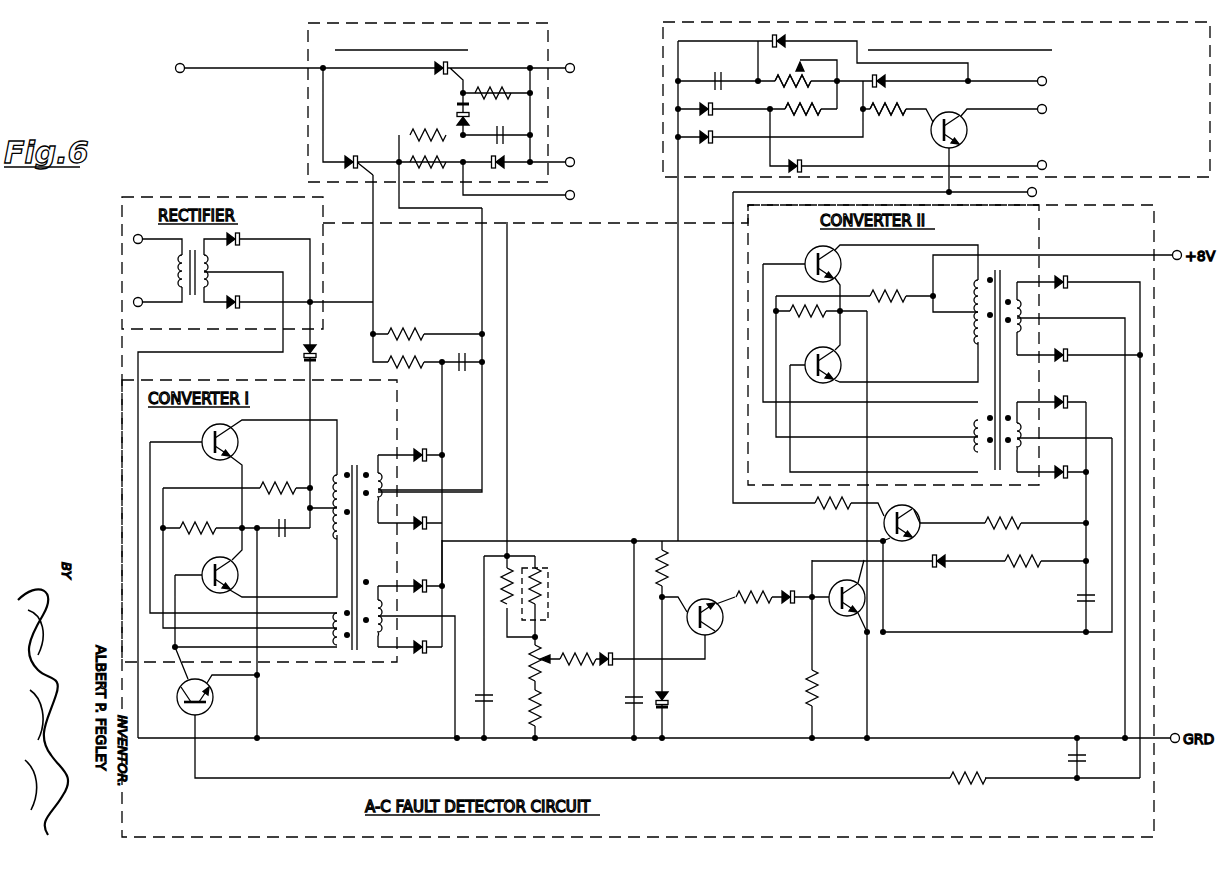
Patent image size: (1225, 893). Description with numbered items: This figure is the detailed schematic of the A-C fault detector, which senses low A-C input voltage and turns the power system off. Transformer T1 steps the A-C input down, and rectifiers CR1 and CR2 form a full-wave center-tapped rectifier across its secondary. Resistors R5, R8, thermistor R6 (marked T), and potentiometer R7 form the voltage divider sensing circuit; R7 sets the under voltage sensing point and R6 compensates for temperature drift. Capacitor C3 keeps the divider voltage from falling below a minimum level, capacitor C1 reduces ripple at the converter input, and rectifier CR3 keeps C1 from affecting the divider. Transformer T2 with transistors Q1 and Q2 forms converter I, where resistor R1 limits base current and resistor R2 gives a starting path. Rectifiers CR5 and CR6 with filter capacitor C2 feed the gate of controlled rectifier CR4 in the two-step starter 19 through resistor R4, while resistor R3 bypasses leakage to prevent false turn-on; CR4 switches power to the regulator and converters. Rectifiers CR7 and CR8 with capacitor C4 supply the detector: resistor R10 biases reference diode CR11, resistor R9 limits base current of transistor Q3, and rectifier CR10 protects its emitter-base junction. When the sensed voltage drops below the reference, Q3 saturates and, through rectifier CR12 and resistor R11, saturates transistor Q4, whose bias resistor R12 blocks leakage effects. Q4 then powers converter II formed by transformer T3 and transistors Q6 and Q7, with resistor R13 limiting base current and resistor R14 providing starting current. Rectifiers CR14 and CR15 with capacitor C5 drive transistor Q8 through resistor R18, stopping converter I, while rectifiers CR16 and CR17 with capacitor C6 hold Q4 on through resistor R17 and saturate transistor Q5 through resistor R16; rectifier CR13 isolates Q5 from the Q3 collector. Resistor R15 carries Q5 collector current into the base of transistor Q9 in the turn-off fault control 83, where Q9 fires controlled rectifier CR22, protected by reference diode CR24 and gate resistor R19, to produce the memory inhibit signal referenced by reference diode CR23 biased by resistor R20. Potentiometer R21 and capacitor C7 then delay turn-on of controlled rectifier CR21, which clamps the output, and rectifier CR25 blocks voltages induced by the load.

The 2-step starter 19 is at (308, 126).
The turn-off fault control 83 is at (663, 88).
The transistor Q1 is at (205, 455).
The transistor Q2 is at (205, 565).
The detector transistor Q3 is at (712, 632).
The transistor Q4 is at (840, 616).
The transistor Q5 is at (916, 518).
The transistor Q6 is at (841, 266).
The transistor Q7 is at (841, 366).
The transistor Q8 is at (210, 700).
The transistor Q9 is at (931, 130).
The transformer T1 is at (190, 292).
The transformer T2 is at (354, 470).
The transformer T3 is at (998, 470).
The thermistor T is at (552, 530).
The resistor R1 is at (200, 522).
The resistor R2 is at (276, 482).
The resistor R3 is at (422, 330).
The resistor R4 is at (412, 368).
The resistor R5 is at (500, 593).
The thermistor R6 is at (547, 598).
The potentiometer R7 is at (533, 662).
The resistor R8 is at (541, 708).
The resistor R9 is at (576, 652).
The resistor R10 is at (668, 568).
The resistor R11 is at (760, 602).
The bias resistor R12 is at (806, 698).
The resistor R13 is at (802, 318).
The resistor R14 is at (894, 304).
The resistor R15 is at (828, 509).
The resistor R16 is at (1029, 513).
The resistor R17 is at (1018, 568).
The resistor R18 is at (962, 784).
The resistor R19 is at (884, 118).
The resistor R20 is at (818, 112).
The potentiometer R21 is at (788, 89).
The capacitor C1 is at (283, 538).
The capacitor C2 is at (462, 372).
The capacitor C3 is at (490, 702).
The capacitor C4 is at (628, 710).
The capacitor C5 is at (1070, 758).
The capacitor C6 is at (1078, 598).
The capacitor C7 is at (714, 76).
The rectifier CR1 is at (238, 245).
The rectifier CR2 is at (238, 300).
The rectifier CR3 is at (316, 353).
The controlled rectifier CR4 is at (352, 157).
The rectifier CR5 is at (420, 447).
The rectifier CR6 is at (421, 530).
The rectifier CR7 is at (421, 580).
The rectifier CR8 is at (421, 653).
The rectifier CR10 is at (612, 666).
The reference diode CR11 is at (667, 696).
The rectifier CR12 is at (788, 590).
The rectifier CR13 is at (944, 568).
The rectifier CR14 is at (1062, 288).
The rectifier CR15 is at (1070, 355).
The rectifier CR16 is at (1068, 400).
The rectifier CR17 is at (1060, 480).
The controlled rectifier CR21 is at (770, 45).
The controlled rectifier CR22 is at (885, 80).
The reference diode CR23 is at (714, 112).
The reference diode CR24 is at (710, 142).
The rectifier CR25 is at (808, 150).